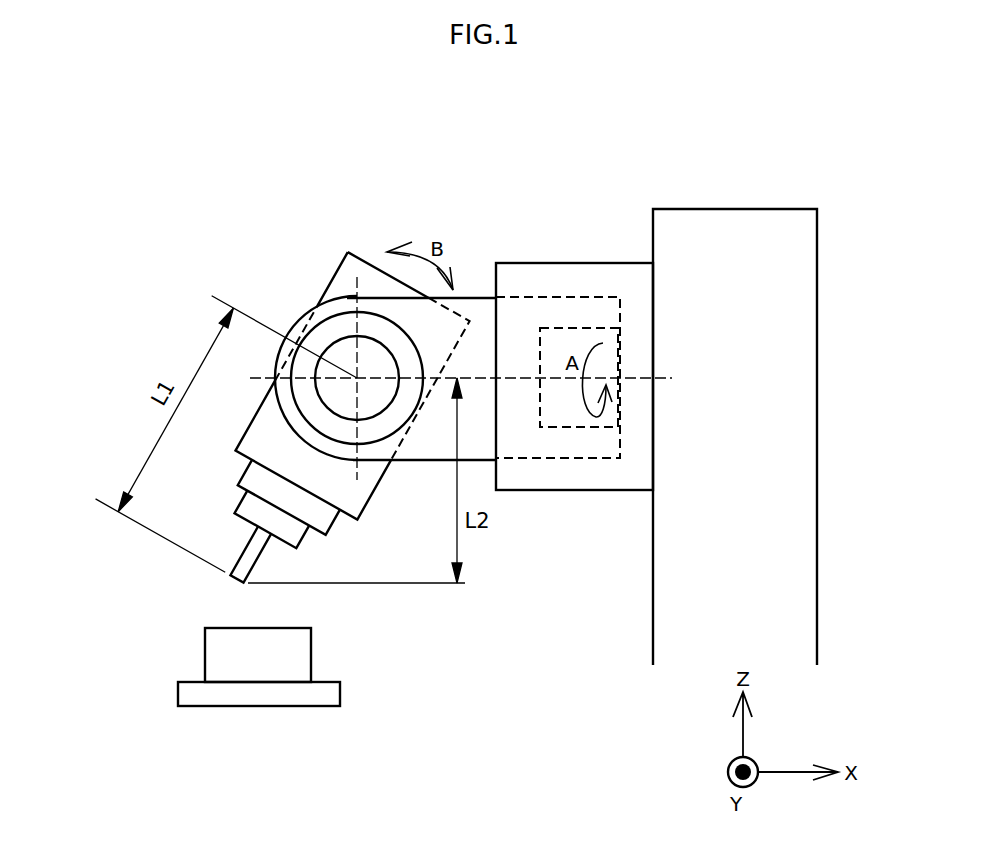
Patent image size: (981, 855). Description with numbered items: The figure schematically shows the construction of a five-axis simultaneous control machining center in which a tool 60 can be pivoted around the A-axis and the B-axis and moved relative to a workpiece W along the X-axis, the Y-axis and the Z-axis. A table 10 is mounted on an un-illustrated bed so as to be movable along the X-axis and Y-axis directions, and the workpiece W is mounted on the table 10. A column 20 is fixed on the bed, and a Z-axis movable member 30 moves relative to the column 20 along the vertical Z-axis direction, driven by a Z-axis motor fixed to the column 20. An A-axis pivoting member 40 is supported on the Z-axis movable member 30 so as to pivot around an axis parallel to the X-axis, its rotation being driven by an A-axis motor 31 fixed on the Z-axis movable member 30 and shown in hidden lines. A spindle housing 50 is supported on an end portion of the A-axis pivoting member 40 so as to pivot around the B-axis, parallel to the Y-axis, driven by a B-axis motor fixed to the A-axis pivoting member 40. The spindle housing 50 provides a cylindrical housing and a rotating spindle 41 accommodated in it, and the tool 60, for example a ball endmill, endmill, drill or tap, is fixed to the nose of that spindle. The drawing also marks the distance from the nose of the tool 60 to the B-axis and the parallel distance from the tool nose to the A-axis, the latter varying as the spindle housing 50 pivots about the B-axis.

The table 10 is at (178, 685).
The column 20 is at (713, 209).
The Z-axis movable member 30 is at (583, 490).
The A-axis motor 31 is at (587, 328).
The A-axis pivoting member 40 is at (490, 297).
The spindle 41 is at (355, 375).
The spindle housing 50 is at (347, 252).
The tool 60 is at (265, 546).
The workpiece W is at (205, 635).